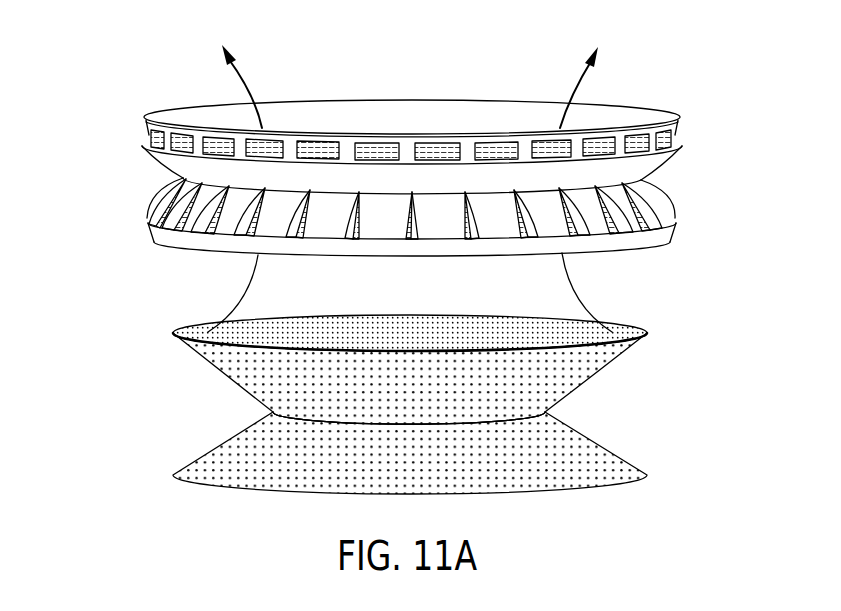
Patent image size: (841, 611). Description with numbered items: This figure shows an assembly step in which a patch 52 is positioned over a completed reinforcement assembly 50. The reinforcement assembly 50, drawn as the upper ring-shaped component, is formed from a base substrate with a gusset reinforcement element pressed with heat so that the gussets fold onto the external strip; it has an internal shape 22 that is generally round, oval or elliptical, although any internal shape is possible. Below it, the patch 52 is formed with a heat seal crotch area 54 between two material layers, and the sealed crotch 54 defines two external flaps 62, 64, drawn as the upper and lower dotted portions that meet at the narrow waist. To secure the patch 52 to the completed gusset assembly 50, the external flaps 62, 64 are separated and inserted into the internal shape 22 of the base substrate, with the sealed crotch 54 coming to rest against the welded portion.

The internal shape 22 is at (442, 115).
The completed reinforcement assembly 50 is at (100, 184).
The patch 52 is at (685, 407).
The heat seal crotch area 54 is at (273, 412).
The external flap 62 is at (623, 358).
The external flap 64 is at (622, 464).